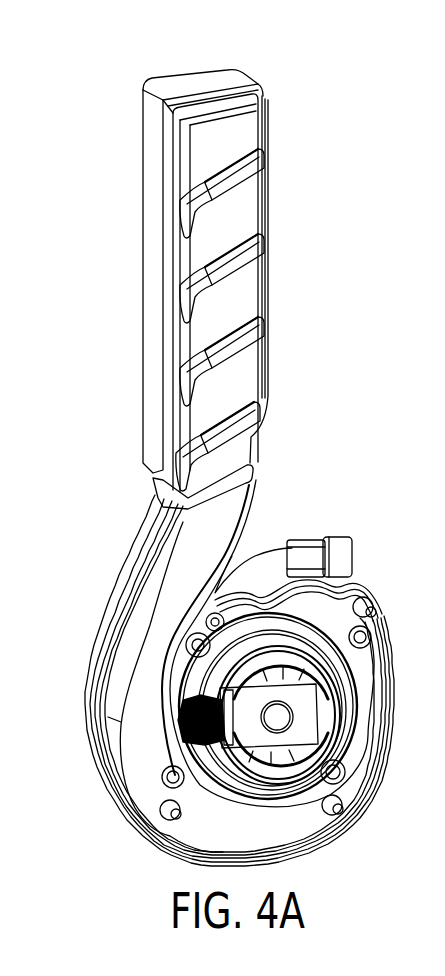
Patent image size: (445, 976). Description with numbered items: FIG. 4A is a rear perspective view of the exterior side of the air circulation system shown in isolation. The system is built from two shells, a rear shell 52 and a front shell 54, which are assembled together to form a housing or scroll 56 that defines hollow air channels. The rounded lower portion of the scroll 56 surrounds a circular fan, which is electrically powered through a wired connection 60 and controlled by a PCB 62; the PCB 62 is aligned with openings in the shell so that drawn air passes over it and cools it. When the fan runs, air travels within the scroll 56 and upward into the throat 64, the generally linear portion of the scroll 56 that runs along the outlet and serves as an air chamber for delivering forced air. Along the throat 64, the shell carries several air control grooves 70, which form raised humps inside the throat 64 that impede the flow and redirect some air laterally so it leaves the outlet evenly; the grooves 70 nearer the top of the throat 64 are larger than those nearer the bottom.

The rear shell 52 is at (232, 105).
The front shell 54 is at (178, 86).
The scroll 56 is at (133, 590).
The wired connection 60 is at (340, 558).
The PCB 62 is at (300, 727).
The throat 64 is at (116, 276).
The air control grooves 70 is at (236, 340).